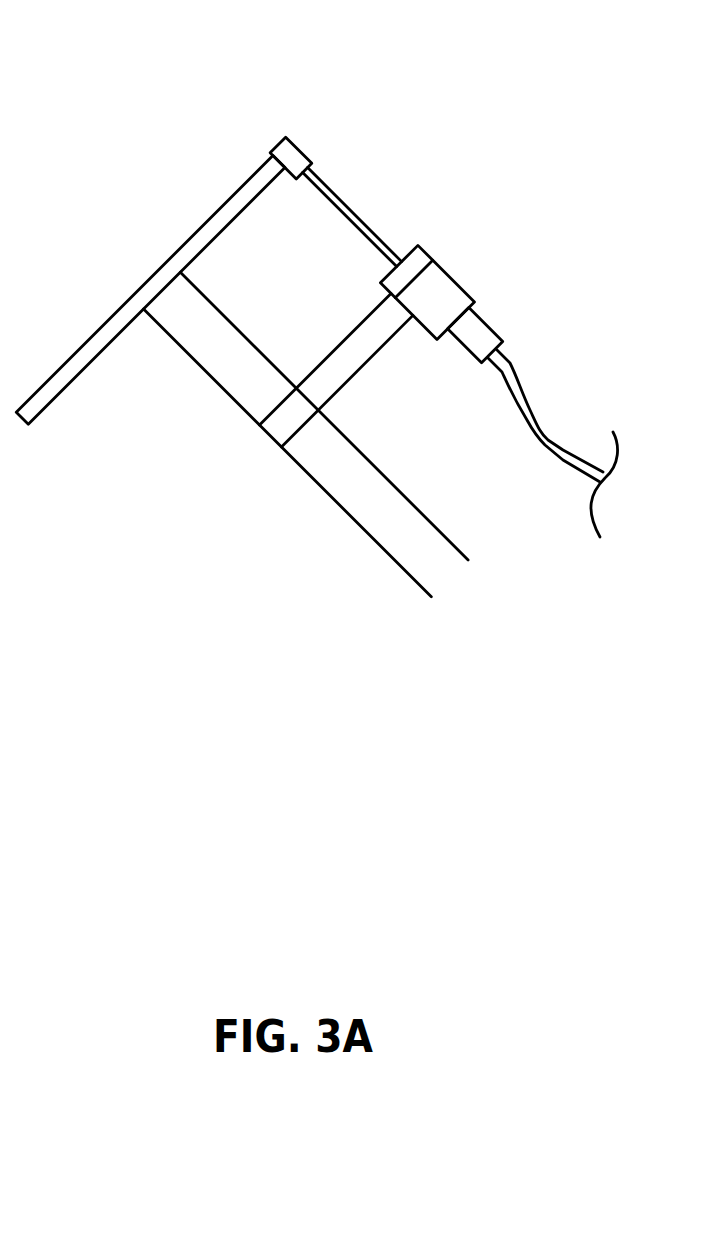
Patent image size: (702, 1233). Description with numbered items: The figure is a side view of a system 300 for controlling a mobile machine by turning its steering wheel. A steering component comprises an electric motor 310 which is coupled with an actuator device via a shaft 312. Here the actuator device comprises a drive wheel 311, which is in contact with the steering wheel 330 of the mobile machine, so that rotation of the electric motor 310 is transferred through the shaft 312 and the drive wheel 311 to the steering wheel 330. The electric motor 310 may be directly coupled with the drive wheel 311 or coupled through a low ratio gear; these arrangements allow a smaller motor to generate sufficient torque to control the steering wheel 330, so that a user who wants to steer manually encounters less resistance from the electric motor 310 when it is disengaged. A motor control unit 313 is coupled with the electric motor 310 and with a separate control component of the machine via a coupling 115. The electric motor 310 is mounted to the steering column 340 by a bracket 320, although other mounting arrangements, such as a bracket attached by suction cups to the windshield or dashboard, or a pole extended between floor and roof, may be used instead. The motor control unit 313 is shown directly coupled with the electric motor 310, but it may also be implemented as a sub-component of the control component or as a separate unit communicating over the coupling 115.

The system 300 is at (70, 32).
The steering wheel 330 is at (200, 228).
The drive wheel 311 is at (296, 150).
The shaft 312 is at (347, 203).
The electric motor 310 is at (448, 294).
The motor control unit 313 is at (477, 331).
The bracket 320 is at (362, 365).
The steering column 340 is at (378, 513).
The coupling 115 is at (532, 420).